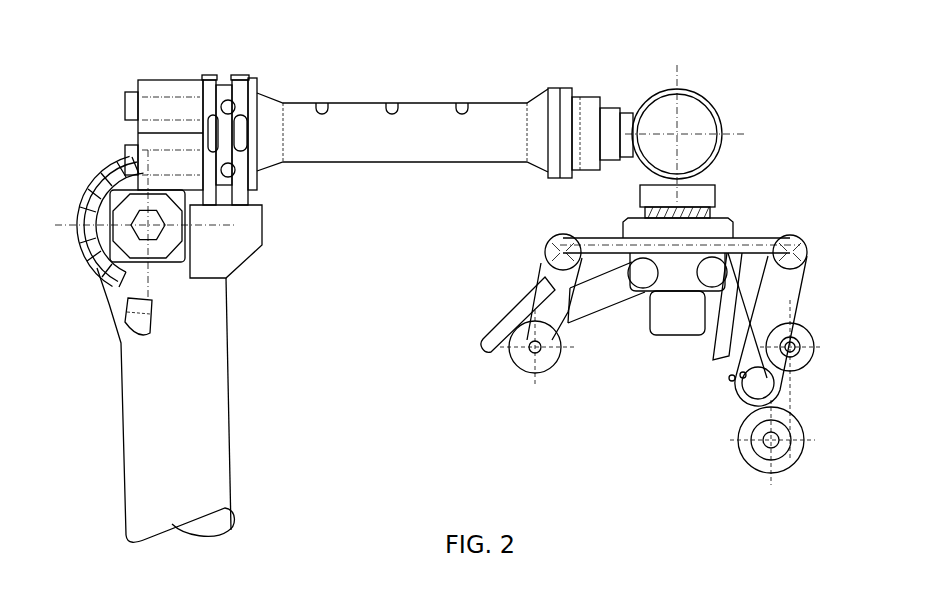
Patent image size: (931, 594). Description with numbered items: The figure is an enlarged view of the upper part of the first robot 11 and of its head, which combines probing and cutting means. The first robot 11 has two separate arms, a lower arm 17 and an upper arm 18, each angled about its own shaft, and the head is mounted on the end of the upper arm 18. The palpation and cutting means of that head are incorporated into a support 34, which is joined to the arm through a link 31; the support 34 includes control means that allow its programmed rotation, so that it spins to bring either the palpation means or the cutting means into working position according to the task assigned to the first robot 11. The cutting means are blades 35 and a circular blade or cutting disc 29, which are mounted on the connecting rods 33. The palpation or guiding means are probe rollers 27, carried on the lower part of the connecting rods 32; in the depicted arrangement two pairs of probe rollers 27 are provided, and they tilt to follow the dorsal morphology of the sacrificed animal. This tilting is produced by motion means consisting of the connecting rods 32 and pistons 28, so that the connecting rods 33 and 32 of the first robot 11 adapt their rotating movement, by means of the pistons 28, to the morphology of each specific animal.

The first robot 11 is at (66, 98).
The lower arm 17 is at (208, 367).
The upper arm 18 is at (410, 122).
The rollers 27 is at (792, 430).
The pistons 28 is at (716, 330).
The circular blade 29 is at (526, 362).
The link 31 is at (690, 118).
The connecting rod 32 is at (775, 302).
The connecting rod 33 is at (558, 282).
The support 34 is at (722, 235).
The blades 35 is at (497, 330).